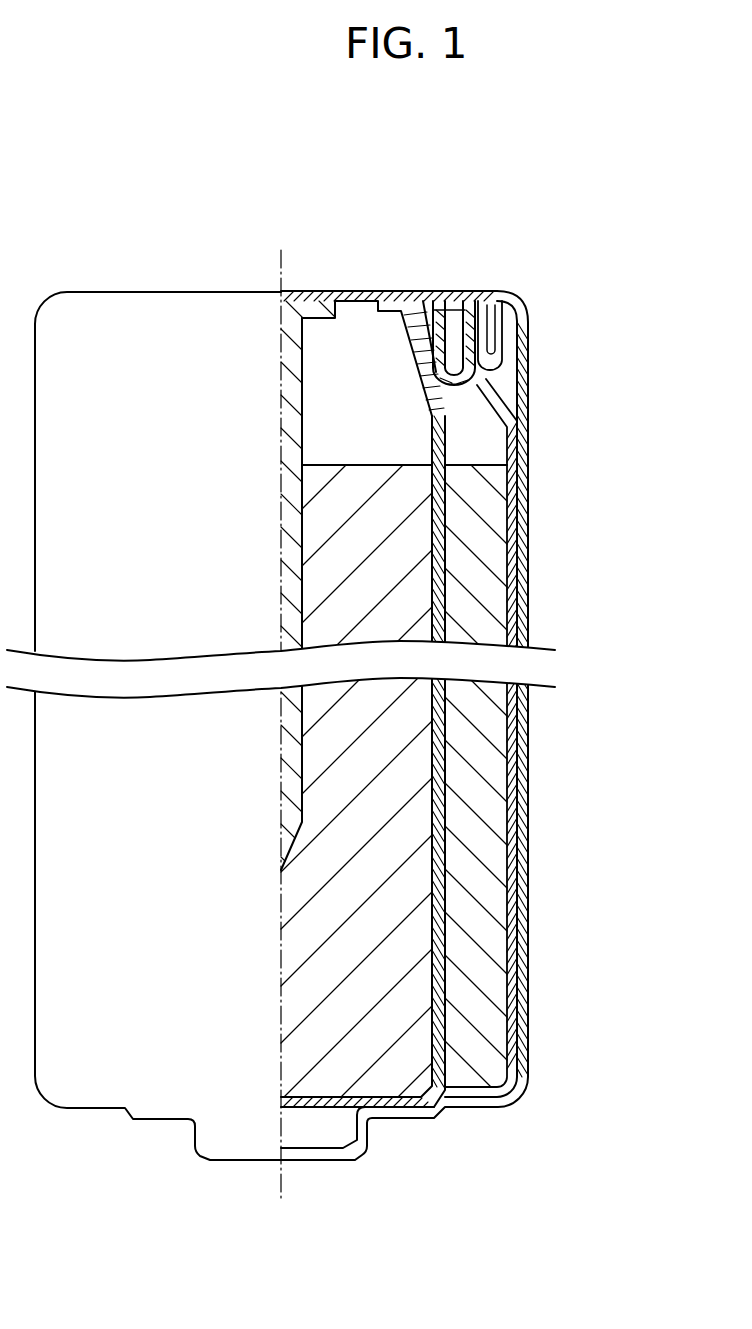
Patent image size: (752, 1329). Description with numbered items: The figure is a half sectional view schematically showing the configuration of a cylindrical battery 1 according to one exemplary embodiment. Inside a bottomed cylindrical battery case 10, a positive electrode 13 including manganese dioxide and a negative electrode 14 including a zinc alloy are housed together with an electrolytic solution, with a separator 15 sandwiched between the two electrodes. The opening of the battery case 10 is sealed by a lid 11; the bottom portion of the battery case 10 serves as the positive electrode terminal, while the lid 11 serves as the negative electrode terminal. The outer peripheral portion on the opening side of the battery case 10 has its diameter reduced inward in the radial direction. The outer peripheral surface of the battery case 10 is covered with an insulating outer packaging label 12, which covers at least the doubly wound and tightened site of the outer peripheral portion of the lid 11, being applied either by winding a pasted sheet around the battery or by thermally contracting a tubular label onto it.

The cylindrical battery 1 is at (320, 165).
The battery case 10 is at (511, 568).
The lid 11 is at (333, 291).
The outer packaging label 12 is at (520, 480).
The positive electrode 13 is at (472, 740).
The negative electrode 14 is at (390, 900).
The separator 15 is at (445, 805).